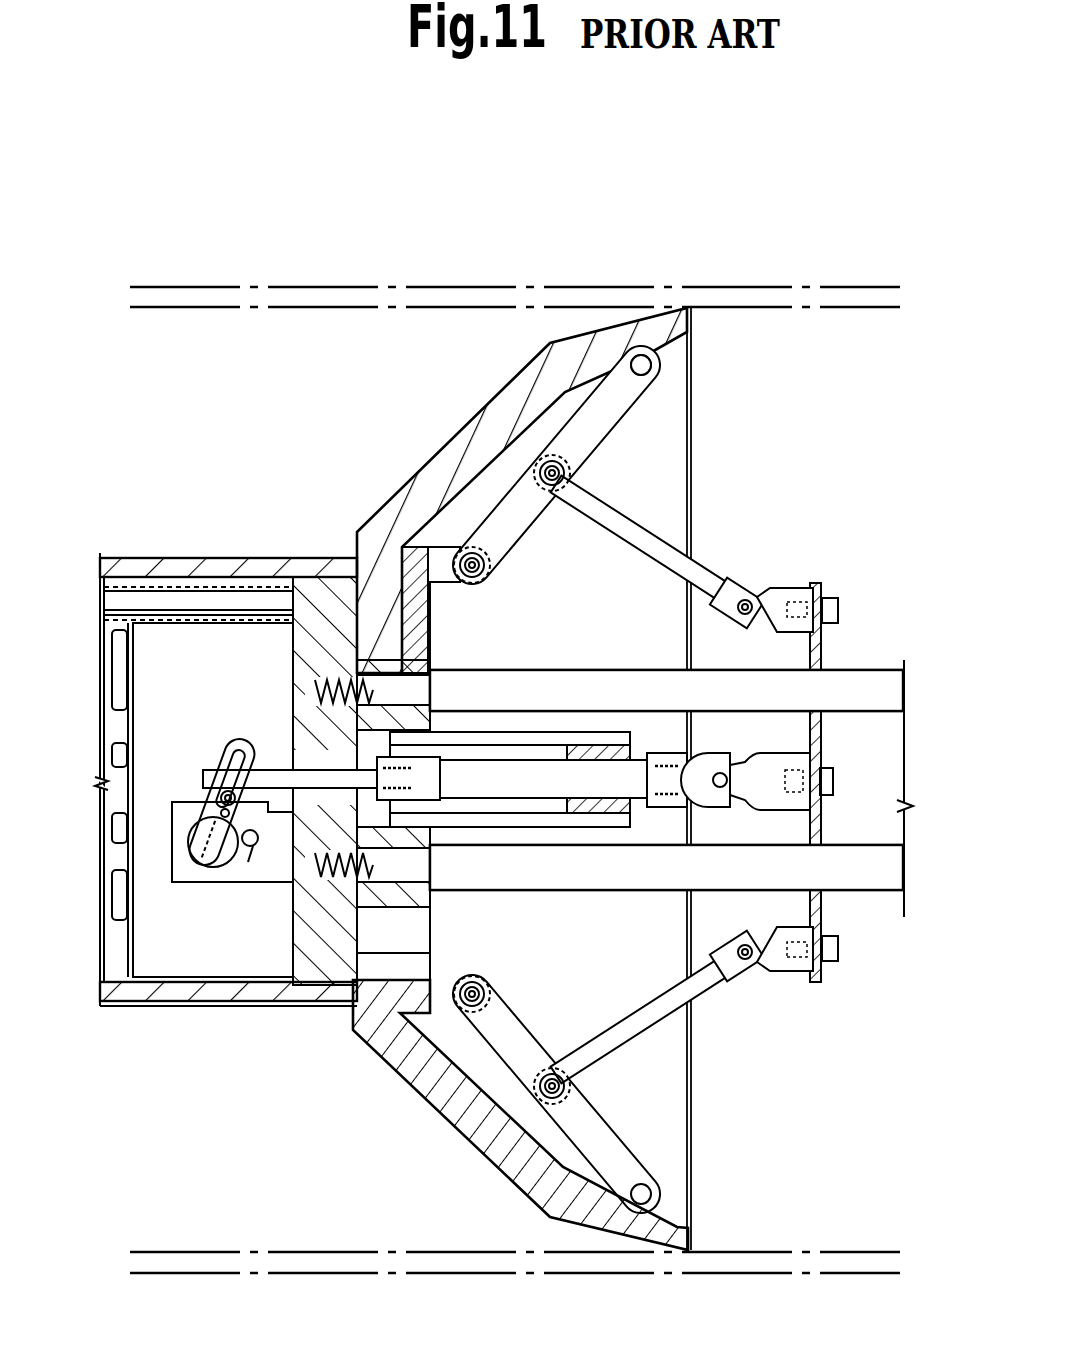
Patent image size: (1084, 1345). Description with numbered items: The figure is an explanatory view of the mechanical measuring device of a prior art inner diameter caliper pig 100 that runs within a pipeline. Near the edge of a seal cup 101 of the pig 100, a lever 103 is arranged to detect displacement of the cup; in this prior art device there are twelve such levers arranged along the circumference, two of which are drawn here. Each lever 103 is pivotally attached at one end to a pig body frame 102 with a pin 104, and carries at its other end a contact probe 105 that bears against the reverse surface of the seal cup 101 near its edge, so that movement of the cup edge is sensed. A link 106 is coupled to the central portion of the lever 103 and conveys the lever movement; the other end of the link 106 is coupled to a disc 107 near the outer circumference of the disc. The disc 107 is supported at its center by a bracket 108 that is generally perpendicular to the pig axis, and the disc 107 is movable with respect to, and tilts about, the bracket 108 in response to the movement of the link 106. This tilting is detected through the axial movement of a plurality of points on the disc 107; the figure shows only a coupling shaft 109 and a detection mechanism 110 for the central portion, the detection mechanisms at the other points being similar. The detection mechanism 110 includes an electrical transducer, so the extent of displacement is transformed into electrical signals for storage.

The pig 100 is at (241, 393).
The seal cup 101 is at (460, 448).
The pig body frame 102 is at (420, 622).
The lever 103 is at (528, 523).
The pin 104 is at (488, 573).
The contact probe 105 is at (645, 365).
The link 106 is at (613, 517).
The disc 107 is at (819, 585).
The bracket 108 is at (763, 768).
The coupling shaft 109 is at (533, 827).
The detection mechanism 110 is at (220, 895).